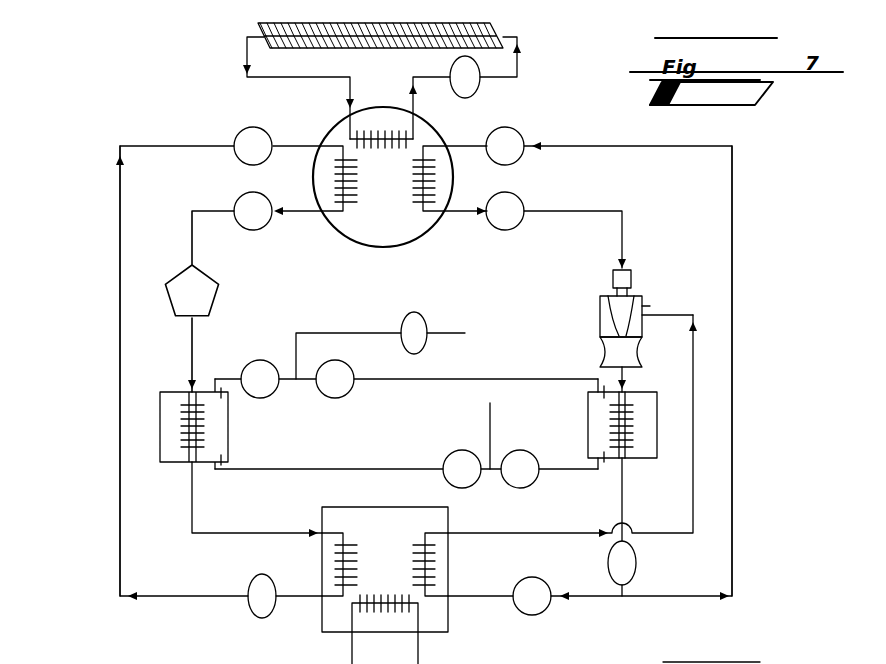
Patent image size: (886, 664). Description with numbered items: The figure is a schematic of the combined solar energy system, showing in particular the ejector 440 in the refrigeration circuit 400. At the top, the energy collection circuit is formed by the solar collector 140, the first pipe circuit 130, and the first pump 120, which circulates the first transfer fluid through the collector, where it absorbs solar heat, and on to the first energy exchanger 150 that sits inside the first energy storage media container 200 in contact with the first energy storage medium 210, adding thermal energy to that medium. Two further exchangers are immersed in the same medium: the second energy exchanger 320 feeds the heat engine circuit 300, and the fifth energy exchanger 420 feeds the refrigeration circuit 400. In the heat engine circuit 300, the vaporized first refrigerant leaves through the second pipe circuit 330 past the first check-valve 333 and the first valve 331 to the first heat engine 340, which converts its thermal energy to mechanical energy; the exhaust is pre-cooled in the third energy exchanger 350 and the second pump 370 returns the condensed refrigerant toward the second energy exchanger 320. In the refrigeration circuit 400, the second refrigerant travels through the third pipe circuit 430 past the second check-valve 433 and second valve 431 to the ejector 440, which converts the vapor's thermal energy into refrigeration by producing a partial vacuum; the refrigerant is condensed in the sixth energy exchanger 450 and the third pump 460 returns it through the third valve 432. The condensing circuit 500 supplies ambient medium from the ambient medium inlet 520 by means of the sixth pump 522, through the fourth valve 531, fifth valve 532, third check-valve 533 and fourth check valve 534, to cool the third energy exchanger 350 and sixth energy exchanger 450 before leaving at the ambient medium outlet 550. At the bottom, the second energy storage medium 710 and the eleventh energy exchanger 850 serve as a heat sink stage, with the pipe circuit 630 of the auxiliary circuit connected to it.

The first pump 120 is at (478, 95).
The first pipe circuit 130 is at (413, 98).
The solar collector 140 is at (500, 48).
The first energy exchanger 150 is at (379, 150).
The first energy storage media container 200 is at (383, 194).
The first energy storage medium 210 is at (383, 247).
The heat engine circuit 300 is at (108, 122).
The second energy exchanger 320 is at (335, 173).
The second pipe circuit 330 is at (120, 267).
The first valve 331 is at (248, 230).
The first check-valve 333 is at (258, 127).
The first heat engine 340 is at (165, 292).
The third energy exchanger 350 is at (160, 442).
The second pump 370 is at (270, 614).
The refrigeration circuit 400 is at (816, 478).
The fifth energy exchanger 420 is at (433, 173).
The third pipe circuit 430 is at (732, 304).
The second valve 431 is at (510, 230).
The third valve 432 is at (540, 578).
The second check-valve 433 is at (510, 127).
The ejector 440 is at (632, 281).
The sixth energy exchanger 450 is at (637, 423).
The third pump 460 is at (636, 565).
The condensing circuit 500 is at (553, 361).
The ambient medium inlet 520 is at (452, 331).
The sixth pump 522 is at (410, 312).
The fourth valve 531 is at (265, 398).
The fifth valve 532 is at (325, 398).
The third check-valve 533 is at (455, 452).
The fourth check valve 534 is at (514, 452).
The ambient medium outlet 550 is at (490, 421).
The pipe circuit 630 is at (352, 612).
The second energy storage medium 710 is at (353, 517).
The eleventh energy exchanger 850 is at (437, 557).